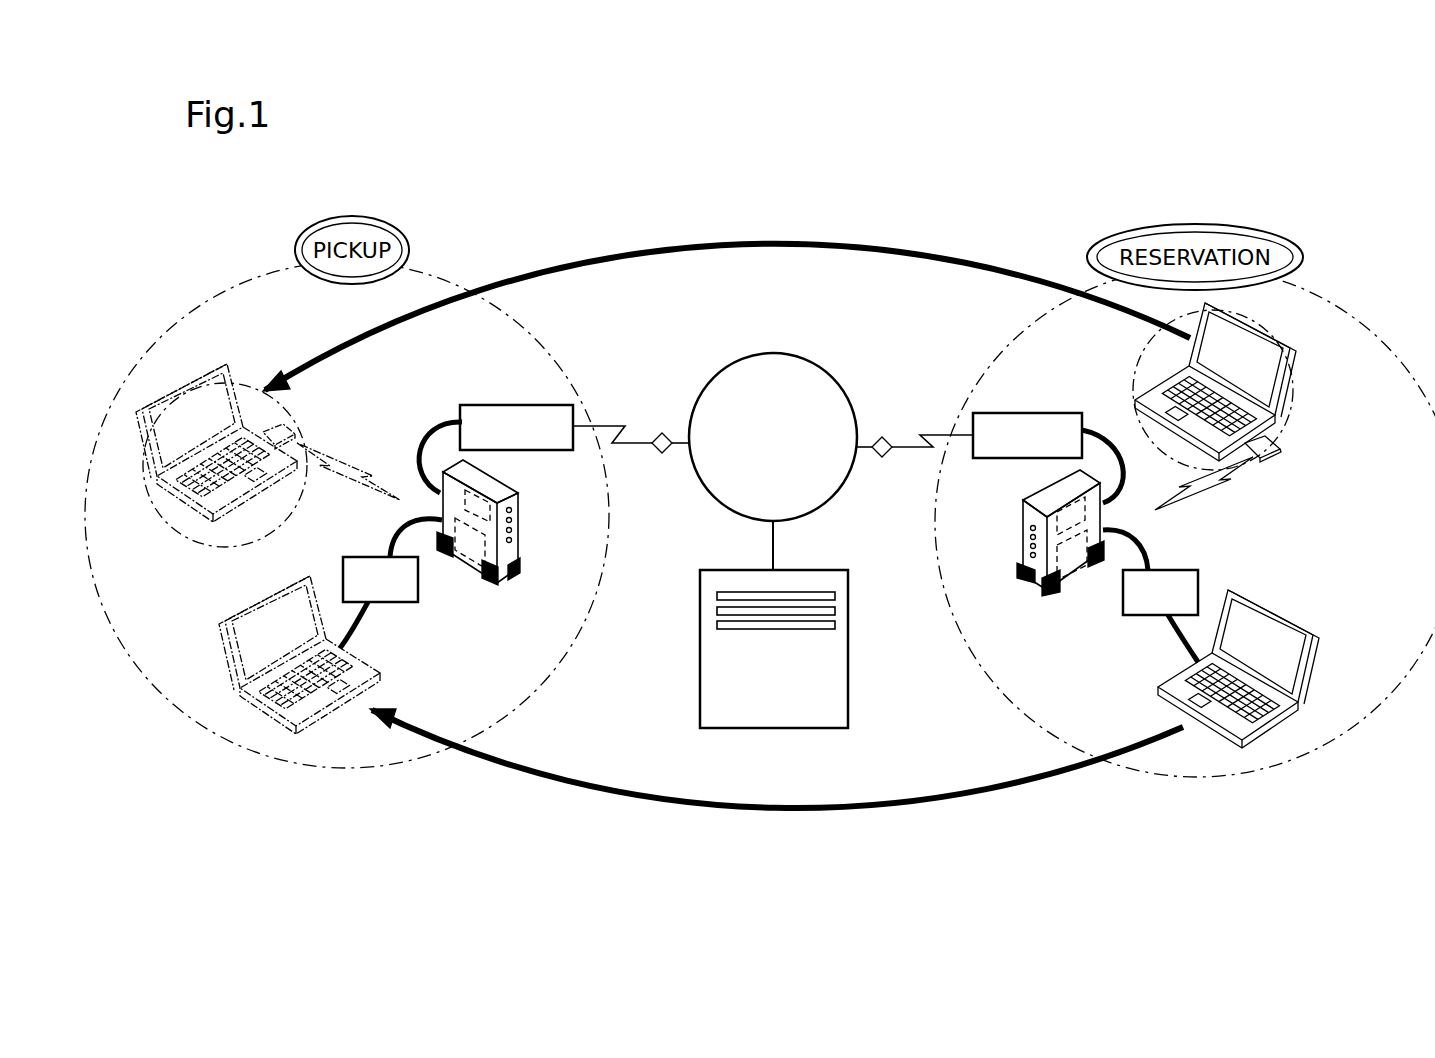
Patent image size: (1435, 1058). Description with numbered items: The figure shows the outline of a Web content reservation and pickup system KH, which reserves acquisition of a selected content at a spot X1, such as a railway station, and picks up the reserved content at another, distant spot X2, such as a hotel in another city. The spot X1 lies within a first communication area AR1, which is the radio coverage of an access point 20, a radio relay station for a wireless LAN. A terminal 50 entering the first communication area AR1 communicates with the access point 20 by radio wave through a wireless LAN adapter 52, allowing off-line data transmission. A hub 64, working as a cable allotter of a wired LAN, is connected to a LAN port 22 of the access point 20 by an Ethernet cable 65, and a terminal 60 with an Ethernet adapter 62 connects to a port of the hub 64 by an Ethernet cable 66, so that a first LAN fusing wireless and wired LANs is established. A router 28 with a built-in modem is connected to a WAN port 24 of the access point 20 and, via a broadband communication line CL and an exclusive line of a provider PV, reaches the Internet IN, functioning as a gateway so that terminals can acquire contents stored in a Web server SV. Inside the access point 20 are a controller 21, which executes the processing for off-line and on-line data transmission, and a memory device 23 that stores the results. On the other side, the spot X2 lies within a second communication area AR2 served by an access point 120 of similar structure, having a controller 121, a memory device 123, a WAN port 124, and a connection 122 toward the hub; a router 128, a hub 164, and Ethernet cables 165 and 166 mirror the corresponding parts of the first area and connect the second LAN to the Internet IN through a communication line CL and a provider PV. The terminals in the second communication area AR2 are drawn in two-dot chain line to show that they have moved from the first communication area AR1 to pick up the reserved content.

The Web content reservation and pickup system KH is at (906, 181).
The Internet IN is at (780, 353).
The Web server SV is at (848, 700).
The communication line CL is at (607, 422).
The provider PV is at (658, 432).
The first communication area AR1 is at (1336, 305).
The second communication area AR2 is at (195, 300).
The spot X1 is at (1140, 362).
The spot X2 is at (170, 535).
The access point 20 is at (1026, 548).
The controller 21 is at (1045, 520).
The LAN port 22 is at (1108, 538).
The memory device 23 is at (1035, 590).
The WAN port 24 is at (1105, 510).
The router 28 is at (1032, 413).
The terminal 50 is at (240, 368).
The wireless LAN adapter 52 is at (285, 432).
The terminal 60 is at (226, 660).
The adapter 62 is at (345, 648).
The hub 64 is at (1198, 582).
The Ethernet cable 65 is at (1150, 552).
The Ethernet cable 66 is at (1168, 637).
The access point 120 is at (516, 534).
The controller 121 is at (520, 492).
The wired LAN connection 122 is at (445, 545).
The memory device 123 is at (503, 578).
The WAN port 124 is at (438, 495).
The router 128 is at (512, 405).
The hub 164 is at (343, 578).
The Ethernet cable 165 is at (392, 552).
The Ethernet cable 166 is at (366, 618).